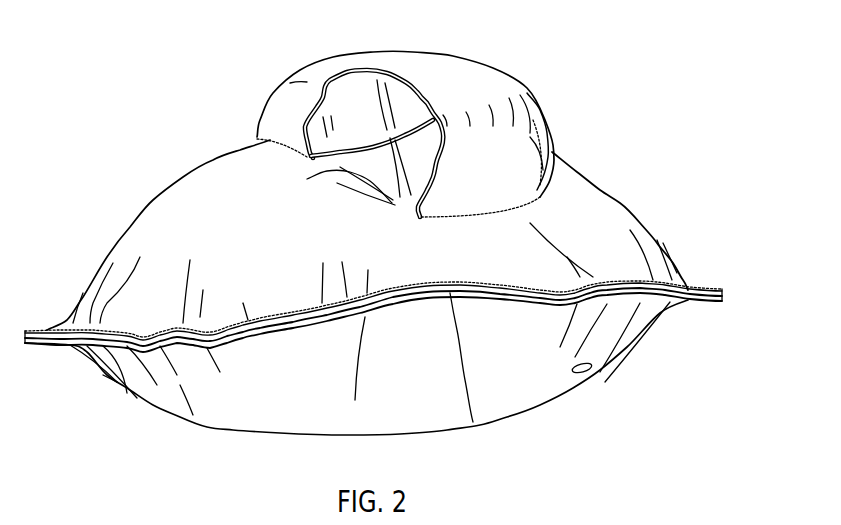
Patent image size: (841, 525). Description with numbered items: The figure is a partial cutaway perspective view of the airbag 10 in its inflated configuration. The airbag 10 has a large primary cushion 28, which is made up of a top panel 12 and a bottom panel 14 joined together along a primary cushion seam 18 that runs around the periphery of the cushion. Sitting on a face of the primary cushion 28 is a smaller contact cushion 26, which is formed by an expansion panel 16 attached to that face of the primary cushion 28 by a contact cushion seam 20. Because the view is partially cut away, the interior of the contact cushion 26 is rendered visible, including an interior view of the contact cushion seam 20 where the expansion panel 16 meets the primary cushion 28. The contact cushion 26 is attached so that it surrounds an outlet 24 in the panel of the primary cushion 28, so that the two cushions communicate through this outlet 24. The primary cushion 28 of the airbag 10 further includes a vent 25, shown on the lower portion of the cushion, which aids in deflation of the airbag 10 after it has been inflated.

The airbag 10 is at (584, 142).
The top panel 12 is at (177, 240).
The bottom panel 14 is at (263, 392).
The expansion panel 16 is at (458, 66).
The primary cushion seam 18 is at (473, 422).
The contact cushion seam 20 is at (527, 207).
The outlet 24 is at (307, 179).
The vent 25 is at (588, 374).
The contact cushion 26 is at (703, 54).
The primary cushion 28 is at (707, 427).